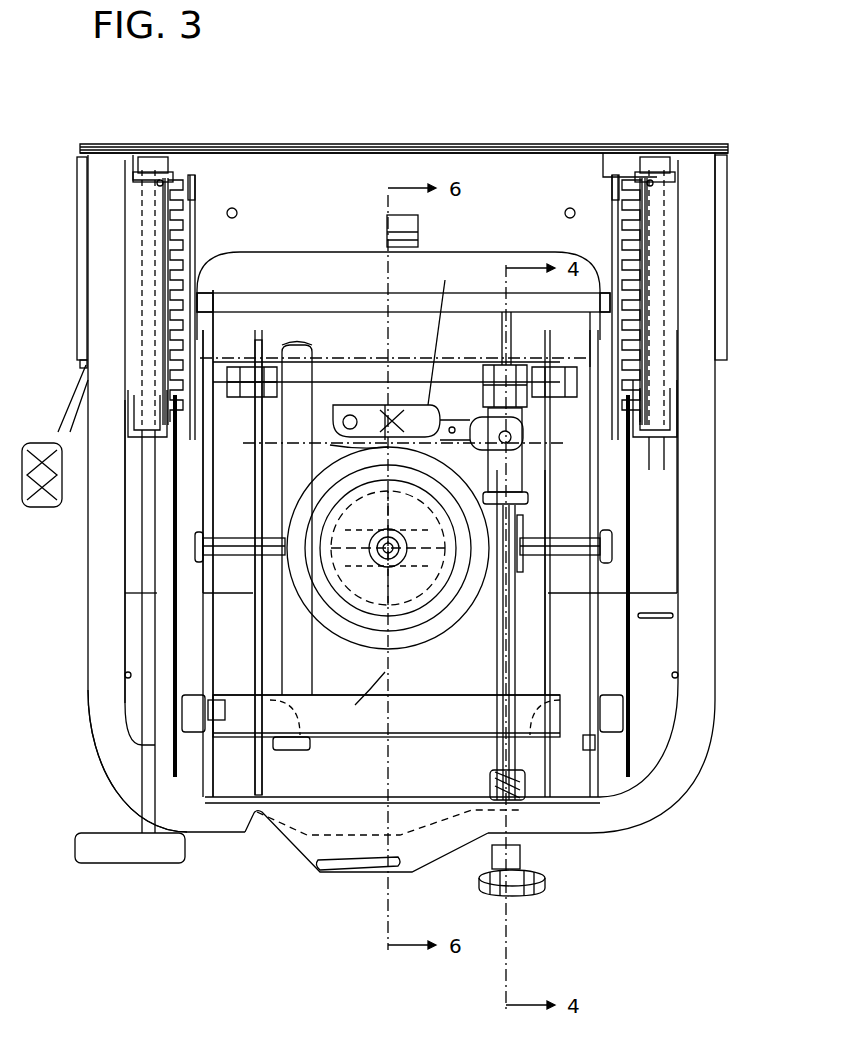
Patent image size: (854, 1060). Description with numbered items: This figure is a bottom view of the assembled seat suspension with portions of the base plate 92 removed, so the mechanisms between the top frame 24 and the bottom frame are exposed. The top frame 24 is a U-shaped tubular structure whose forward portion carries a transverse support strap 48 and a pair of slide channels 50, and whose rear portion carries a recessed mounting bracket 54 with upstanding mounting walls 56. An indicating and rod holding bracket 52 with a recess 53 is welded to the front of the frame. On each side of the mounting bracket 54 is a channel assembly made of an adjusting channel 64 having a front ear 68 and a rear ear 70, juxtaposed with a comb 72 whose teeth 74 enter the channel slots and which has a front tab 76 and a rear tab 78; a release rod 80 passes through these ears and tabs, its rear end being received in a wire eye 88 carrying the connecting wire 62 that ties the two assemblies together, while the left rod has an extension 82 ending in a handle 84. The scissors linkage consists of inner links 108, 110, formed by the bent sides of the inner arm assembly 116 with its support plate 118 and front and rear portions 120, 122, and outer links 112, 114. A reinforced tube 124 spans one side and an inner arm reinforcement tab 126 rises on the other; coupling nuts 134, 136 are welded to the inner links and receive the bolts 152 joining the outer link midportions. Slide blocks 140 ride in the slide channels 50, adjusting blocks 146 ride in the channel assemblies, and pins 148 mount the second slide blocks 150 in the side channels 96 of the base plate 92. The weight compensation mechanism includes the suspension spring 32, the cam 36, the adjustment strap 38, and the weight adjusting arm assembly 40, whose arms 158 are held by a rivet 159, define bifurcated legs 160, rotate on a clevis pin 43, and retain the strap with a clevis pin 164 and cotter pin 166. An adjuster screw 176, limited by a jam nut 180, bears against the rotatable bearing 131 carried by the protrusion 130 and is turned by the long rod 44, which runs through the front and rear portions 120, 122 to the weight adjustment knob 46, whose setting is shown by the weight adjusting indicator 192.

The top frame 24 is at (82, 722).
The suspension spring 32 is at (334, 642).
The cam 36 is at (462, 603).
The adjustment strap 38 is at (363, 447).
The weight adjusting arm assembly 40 is at (428, 405).
The clevis pin 43 is at (352, 413).
The long rod 44 is at (497, 673).
The weight adjustment knob 46 is at (528, 892).
The transverse support strap 48 is at (125, 660).
The slide channels 50 is at (253, 768).
The indicating and rod holding bracket 52 is at (420, 867).
The recess 53 is at (342, 868).
The mounting bracket 54 is at (352, 150).
The mounting walls 56 is at (78, 190).
The connecting wire 62 is at (412, 150).
The adjusting channel 64 is at (187, 222).
The front ear 68 is at (190, 412).
The rear ear 70 is at (197, 185).
The comb 72 is at (138, 300).
The teeth 74 is at (170, 320).
The front tab 76 is at (130, 412).
The rear tab 78 is at (167, 175).
The release rod 80 is at (656, 470).
The extension 82 is at (148, 587).
The handle 84 is at (140, 860).
The wire eye 88 is at (148, 162).
The base plate 92 is at (560, 425).
The side channels 96 is at (187, 637).
The inner link 108 is at (267, 655).
The inner link 110 is at (517, 653).
The outer link 112 is at (203, 497).
The outer link 114 is at (600, 505).
The inner arm assembly 116 is at (385, 672).
The support plate 118 is at (415, 685).
The front portion 120 is at (327, 732).
The rear portion 122 is at (323, 367).
The reinforced tube 124 is at (288, 380).
The inner arm reinforcement tab 126 is at (525, 560).
The protrusion 130 is at (520, 507).
The rotatable bearing 131 is at (528, 497).
The coupling nut 134 is at (236, 537).
The coupling nut 136 is at (577, 548).
The slide blocks 140 is at (268, 712).
The adjusting blocks 146 is at (205, 312).
The pins 148 is at (218, 717).
The slide blocks 150 is at (193, 727).
The bolt 152 is at (195, 546).
The arms 158 is at (397, 417).
The rivet 159 is at (470, 417).
The bifurcated legs 160 is at (562, 370).
The clevis pin 164 is at (395, 407).
The cotter pin 166 is at (452, 426).
The adjuster screw 176 is at (522, 467).
The jam nut 180 is at (512, 370).
The weight adjusting indicator 192 is at (307, 832).